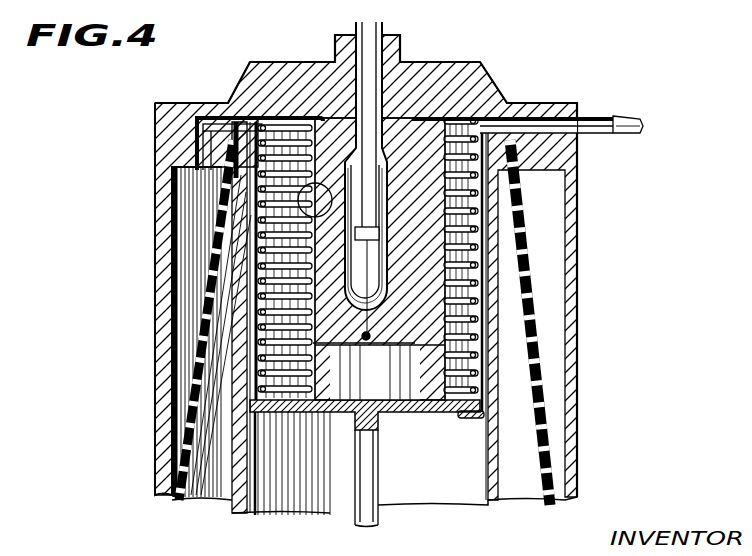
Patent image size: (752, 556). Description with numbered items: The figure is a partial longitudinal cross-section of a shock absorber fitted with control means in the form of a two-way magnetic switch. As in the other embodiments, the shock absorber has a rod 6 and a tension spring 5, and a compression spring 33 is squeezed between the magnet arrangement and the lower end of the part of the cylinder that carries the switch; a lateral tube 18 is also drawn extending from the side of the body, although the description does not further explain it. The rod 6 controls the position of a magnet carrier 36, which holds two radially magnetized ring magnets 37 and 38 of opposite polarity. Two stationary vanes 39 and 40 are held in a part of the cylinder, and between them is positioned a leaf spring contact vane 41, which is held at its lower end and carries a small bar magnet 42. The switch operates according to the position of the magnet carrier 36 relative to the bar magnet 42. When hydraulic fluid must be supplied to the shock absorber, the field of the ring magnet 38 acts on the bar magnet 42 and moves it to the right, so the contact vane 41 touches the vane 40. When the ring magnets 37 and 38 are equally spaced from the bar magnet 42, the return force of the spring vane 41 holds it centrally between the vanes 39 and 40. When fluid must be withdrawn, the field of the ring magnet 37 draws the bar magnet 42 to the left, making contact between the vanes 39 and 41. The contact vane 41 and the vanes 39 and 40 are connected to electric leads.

The tension spring 5 is at (480, 318).
The rod 6 is at (360, 495).
The lateral tube 18 is at (598, 118).
The compression spring 33 is at (452, 123).
The magnet carrier 36 is at (432, 370).
The ring magnet 37 is at (313, 259).
The ring magnet 38 is at (380, 330).
The stationary vane 39 is at (352, 172).
The stationary vane 40 is at (386, 172).
The leaf spring contact vane 41 is at (364, 329).
The bar magnet 42 is at (383, 234).